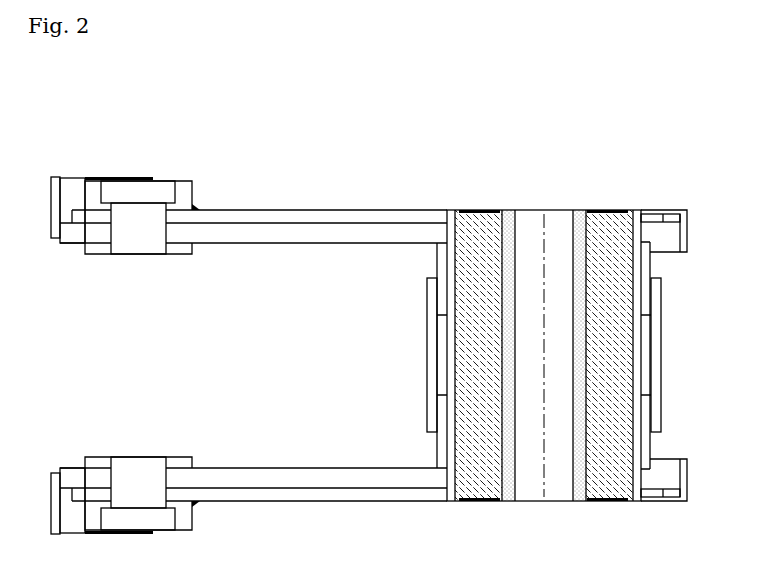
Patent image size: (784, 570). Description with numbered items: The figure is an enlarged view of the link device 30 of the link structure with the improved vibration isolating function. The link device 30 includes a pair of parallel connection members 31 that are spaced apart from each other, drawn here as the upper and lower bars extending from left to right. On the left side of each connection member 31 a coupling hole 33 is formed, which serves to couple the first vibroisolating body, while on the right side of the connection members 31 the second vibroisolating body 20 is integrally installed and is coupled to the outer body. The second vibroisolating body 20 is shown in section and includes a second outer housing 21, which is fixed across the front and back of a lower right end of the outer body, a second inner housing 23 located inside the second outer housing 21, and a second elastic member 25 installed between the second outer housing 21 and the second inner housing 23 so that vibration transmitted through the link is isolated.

The second vibroisolating body 20 is at (621, 205).
The second outer housing 21 is at (635, 413).
The second inner housing 23 is at (577, 350).
The second elastic member 25 is at (613, 293).
The link device 30 is at (364, 160).
The connection member 31 is at (243, 220).
The coupling hole 33 is at (148, 228).